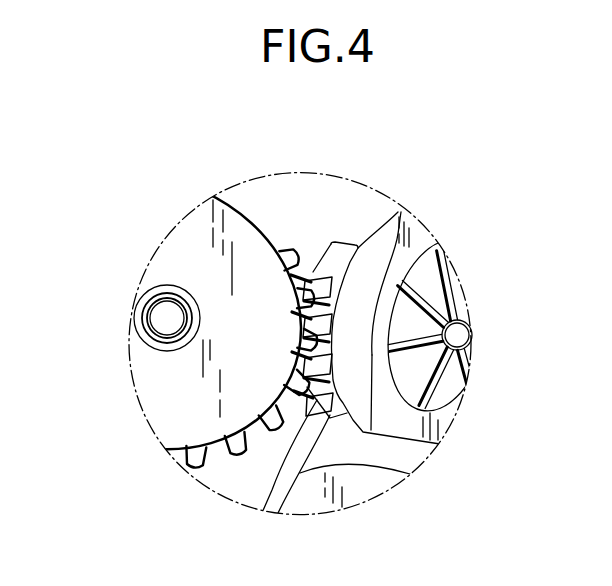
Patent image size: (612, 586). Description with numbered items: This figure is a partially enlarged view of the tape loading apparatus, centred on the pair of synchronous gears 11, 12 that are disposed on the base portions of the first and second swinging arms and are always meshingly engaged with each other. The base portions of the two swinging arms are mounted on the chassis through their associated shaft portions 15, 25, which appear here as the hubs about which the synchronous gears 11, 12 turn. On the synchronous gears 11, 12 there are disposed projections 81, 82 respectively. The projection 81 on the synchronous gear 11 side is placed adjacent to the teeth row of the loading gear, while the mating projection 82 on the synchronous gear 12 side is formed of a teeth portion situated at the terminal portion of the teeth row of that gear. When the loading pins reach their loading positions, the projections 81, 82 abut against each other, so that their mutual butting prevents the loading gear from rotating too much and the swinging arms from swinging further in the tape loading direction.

The synchronous gear 11 is at (280, 488).
The synchronous gear 12 is at (258, 458).
The shaft portion 15 is at (462, 337).
The shaft portion 25 is at (163, 316).
The projection 81 is at (340, 240).
The projection 82 is at (297, 252).